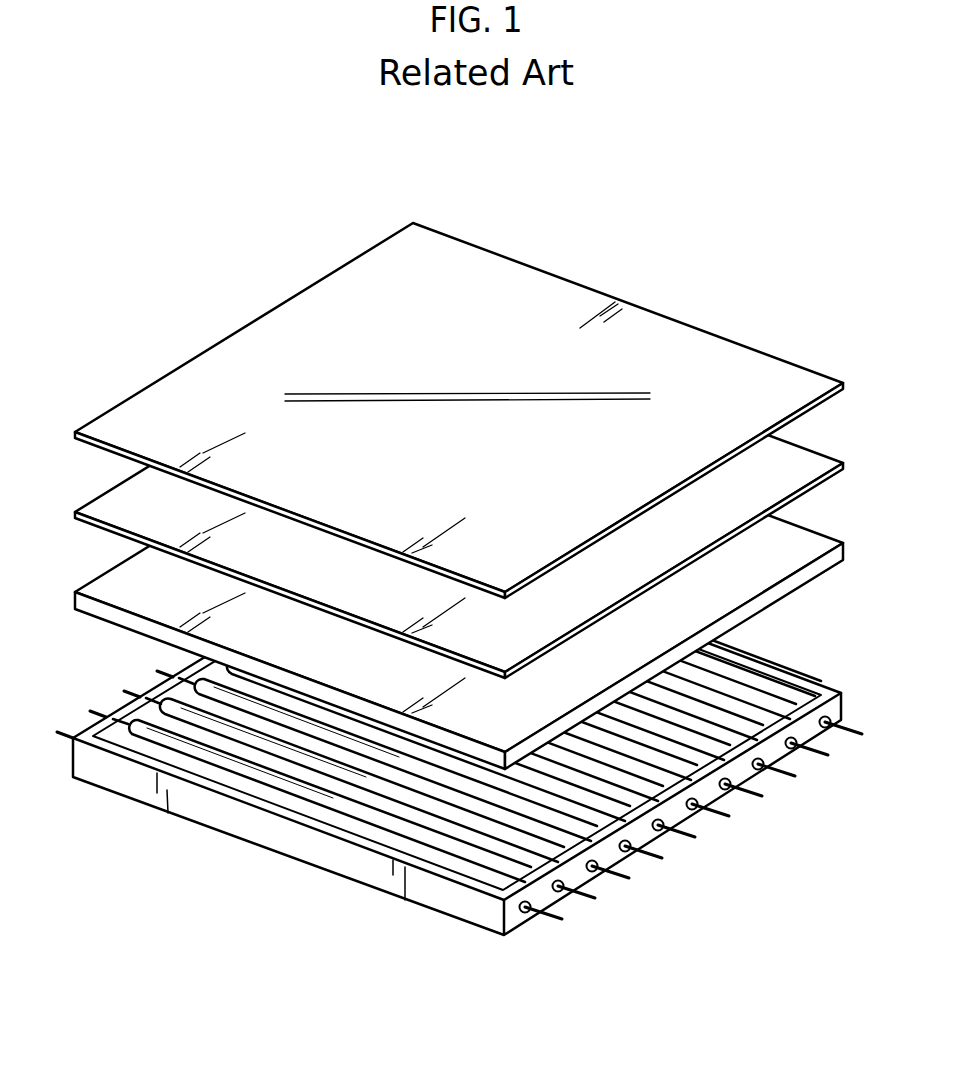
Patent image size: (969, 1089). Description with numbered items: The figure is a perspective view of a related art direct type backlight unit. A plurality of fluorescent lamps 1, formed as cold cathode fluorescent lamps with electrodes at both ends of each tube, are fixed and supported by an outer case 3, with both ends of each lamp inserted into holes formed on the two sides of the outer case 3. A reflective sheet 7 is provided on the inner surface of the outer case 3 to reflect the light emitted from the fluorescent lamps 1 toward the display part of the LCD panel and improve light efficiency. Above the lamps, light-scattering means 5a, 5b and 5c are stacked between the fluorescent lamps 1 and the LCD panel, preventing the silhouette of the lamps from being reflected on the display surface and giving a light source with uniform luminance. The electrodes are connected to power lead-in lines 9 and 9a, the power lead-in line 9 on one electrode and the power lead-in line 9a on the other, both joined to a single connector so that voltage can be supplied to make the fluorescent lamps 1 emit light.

The fluorescent lamp 1 is at (303, 787).
The outer case 3 is at (480, 913).
The light-scattering means 5a is at (795, 537).
The light-scattering means 5b is at (795, 455).
The light-scattering means 5c is at (795, 374).
The reflective sheet 7 is at (420, 814).
The power lead-in line 9 is at (552, 920).
The power lead-in line 9a is at (63, 737).